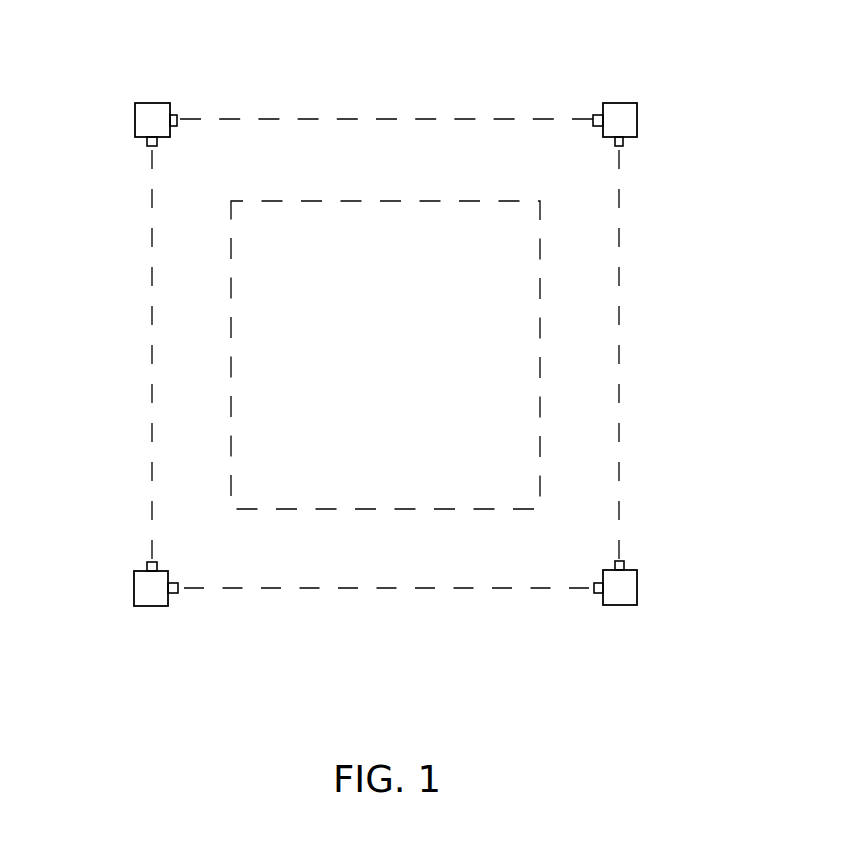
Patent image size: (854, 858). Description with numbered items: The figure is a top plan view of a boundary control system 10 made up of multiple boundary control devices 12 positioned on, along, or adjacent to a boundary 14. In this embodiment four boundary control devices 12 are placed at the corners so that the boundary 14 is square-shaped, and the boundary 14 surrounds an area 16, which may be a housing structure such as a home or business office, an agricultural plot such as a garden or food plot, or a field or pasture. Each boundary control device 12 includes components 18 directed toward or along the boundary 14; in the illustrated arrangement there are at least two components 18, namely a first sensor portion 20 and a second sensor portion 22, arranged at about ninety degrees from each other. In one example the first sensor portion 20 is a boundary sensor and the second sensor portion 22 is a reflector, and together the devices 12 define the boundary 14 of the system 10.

The boundary control system 10 is at (319, 74).
The boundary control device 12 is at (145, 117).
The boundary 14 is at (380, 118).
The area 16 is at (497, 297).
The components 18 is at (178, 119).
The first sensor portion 20 is at (174, 117).
The second sensor portion 22 is at (151, 148).